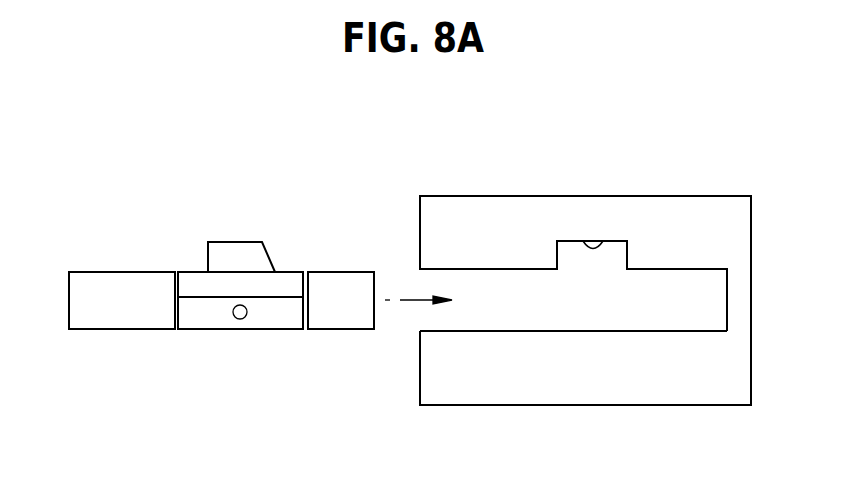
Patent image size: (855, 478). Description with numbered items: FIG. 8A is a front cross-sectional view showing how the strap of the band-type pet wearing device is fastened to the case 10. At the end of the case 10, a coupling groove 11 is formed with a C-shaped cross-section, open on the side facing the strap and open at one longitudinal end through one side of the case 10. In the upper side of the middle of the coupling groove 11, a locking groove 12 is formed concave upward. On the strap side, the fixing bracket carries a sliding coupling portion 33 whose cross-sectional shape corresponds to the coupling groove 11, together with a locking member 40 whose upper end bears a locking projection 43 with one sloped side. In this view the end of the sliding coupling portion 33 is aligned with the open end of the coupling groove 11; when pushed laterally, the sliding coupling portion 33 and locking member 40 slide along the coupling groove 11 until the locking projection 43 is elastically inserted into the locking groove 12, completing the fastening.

The case 10 is at (496, 205).
The coupling groove 11 is at (682, 307).
The locking groove 12 is at (601, 241).
The sliding coupling portion 33 is at (333, 325).
The locking member 40 is at (288, 278).
The locking projection 43 is at (236, 249).